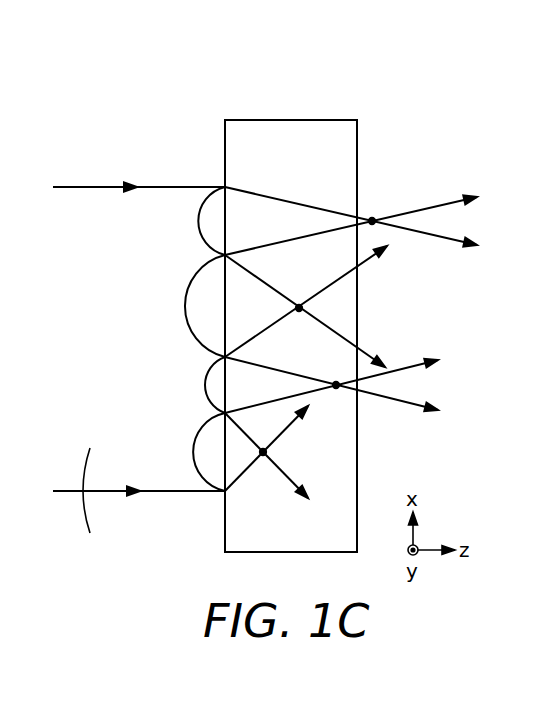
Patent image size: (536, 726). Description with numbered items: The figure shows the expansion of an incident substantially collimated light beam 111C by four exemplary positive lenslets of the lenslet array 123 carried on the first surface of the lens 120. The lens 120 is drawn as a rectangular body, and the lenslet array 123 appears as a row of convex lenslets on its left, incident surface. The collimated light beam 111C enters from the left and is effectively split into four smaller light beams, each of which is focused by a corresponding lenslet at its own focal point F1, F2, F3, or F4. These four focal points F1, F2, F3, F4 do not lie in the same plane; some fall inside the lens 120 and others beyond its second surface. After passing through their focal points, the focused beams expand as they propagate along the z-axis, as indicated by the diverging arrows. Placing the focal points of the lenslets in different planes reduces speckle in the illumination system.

The lens 120 is at (282, 130).
The lenslet array 123 is at (203, 445).
The collimated light beam 111C is at (106, 508).
The focal point F1 is at (383, 203).
The focal point F2 is at (297, 288).
The focal point F3 is at (335, 369).
The focal point F4 is at (286, 451).